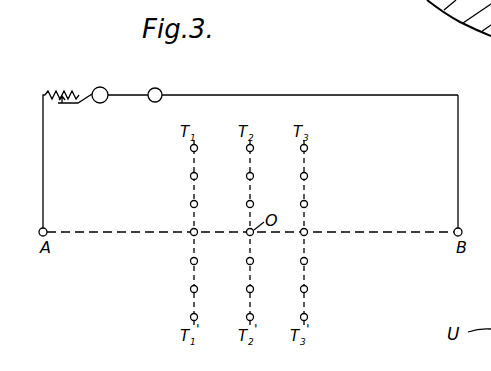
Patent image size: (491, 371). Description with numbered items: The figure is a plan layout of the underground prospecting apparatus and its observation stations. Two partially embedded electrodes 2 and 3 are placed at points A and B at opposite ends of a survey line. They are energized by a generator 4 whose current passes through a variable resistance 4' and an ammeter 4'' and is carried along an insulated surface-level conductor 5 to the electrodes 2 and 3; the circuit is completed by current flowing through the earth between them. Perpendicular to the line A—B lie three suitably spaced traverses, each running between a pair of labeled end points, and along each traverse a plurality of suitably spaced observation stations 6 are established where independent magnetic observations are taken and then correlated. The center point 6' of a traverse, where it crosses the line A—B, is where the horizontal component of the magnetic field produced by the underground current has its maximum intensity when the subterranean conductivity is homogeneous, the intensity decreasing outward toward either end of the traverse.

The electrode 2 is at (39, 236).
The electrode 3 is at (454, 236).
The generator 4 is at (98, 109).
The variable resistance 4' is at (68, 86).
The ammeter 4'' is at (149, 87).
The insulated surface-level conductor 5 is at (458, 130).
The observation stations 6 is at (177, 276).
The center point of traverse 6' is at (176, 217).